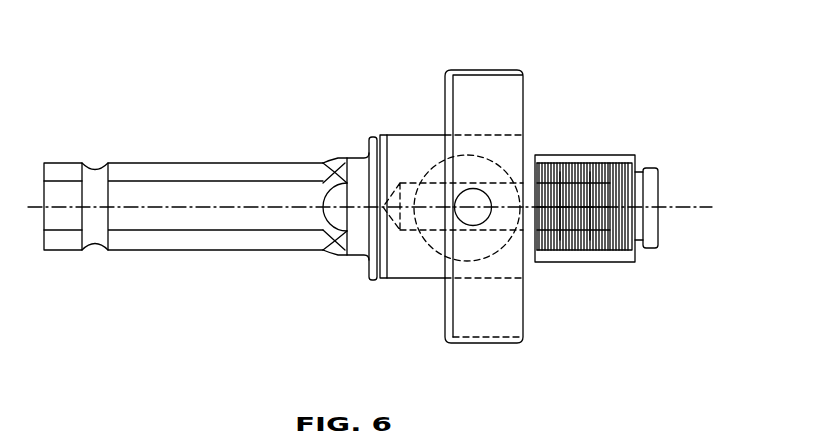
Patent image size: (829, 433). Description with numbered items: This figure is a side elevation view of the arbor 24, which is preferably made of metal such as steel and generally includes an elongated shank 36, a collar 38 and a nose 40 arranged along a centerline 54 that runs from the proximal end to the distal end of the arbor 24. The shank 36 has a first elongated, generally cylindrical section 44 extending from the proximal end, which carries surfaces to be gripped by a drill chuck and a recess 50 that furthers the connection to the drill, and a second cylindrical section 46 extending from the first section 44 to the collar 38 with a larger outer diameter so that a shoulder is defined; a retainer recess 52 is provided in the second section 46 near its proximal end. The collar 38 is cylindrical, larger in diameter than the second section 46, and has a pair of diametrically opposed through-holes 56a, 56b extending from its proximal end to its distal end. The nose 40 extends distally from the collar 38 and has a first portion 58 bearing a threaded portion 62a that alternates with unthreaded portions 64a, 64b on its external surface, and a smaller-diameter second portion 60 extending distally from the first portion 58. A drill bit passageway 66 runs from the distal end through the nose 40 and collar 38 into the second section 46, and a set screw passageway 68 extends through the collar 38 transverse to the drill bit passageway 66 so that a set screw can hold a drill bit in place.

The arbor 24 is at (173, 113).
The elongated shank 36 is at (195, 208).
The collar 38 is at (497, 207).
The nose 40 is at (610, 192).
The first cylindrical section 44 is at (170, 252).
The second cylindrical section 46 is at (418, 280).
The recess 50 is at (95, 168).
The retainer recess 52 is at (377, 283).
The centerline 54 is at (687, 207).
The through-hole 56a is at (495, 70).
The through-hole 56b is at (492, 345).
The first portion 58 is at (615, 262).
The second portion 60 is at (655, 167).
The threaded portion 62a is at (613, 155).
The unthreaded portion 64a is at (560, 155).
The unthreaded portion 64b is at (565, 262).
The drill bit passageway 66 is at (415, 183).
The set screw passageway 68 is at (472, 192).